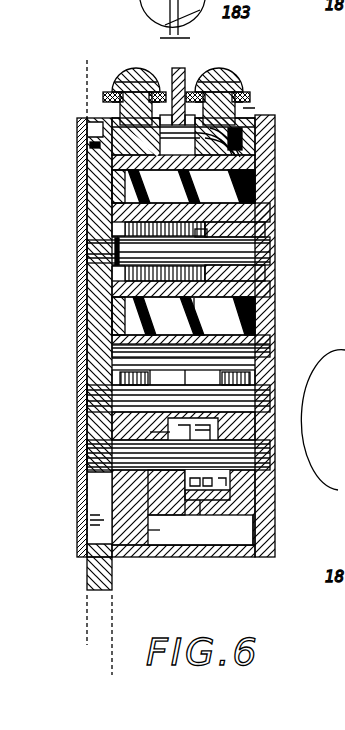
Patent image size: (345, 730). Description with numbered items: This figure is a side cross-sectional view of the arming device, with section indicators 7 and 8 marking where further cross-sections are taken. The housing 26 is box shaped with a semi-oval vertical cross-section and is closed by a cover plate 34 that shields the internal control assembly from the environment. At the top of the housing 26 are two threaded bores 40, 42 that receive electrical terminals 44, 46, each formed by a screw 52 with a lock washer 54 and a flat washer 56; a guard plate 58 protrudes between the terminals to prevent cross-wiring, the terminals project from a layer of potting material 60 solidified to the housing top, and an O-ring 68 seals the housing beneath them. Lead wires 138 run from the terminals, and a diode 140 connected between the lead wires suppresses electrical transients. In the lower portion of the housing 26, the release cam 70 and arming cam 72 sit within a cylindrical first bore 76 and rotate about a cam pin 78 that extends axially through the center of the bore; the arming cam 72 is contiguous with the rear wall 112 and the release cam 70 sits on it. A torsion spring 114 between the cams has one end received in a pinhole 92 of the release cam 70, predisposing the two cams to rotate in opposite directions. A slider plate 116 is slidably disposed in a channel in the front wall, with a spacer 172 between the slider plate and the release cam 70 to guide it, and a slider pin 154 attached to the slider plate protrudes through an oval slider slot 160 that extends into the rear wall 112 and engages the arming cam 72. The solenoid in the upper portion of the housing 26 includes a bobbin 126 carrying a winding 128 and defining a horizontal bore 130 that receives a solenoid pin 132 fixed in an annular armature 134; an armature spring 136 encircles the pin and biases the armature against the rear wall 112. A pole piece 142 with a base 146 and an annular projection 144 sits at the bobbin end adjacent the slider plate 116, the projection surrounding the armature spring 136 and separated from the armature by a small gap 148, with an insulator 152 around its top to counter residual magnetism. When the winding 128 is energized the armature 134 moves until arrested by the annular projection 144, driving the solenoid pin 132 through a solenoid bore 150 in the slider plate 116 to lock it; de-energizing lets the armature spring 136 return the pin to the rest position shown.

The section line 7- 7 is at (76, 74).
The section line 8- 8 is at (97, 143).
The housing 26 is at (212, 548).
The cover plate 34 is at (85, 440).
The threaded bore 40 is at (118, 108).
The threaded bore 42 is at (243, 110).
The electrical terminal 44 is at (130, 76).
The electrical terminal 46 is at (228, 76).
The screw 52 is at (155, 72).
The lock washer 54 is at (248, 92).
The flat washer 56 is at (246, 108).
The guard plate 58 is at (178, 68).
The potting material 60 is at (258, 116).
The O-ring 68 is at (238, 150).
The release cam 70 is at (168, 512).
The arming cam 72 is at (250, 428).
The first bore 76 is at (244, 548).
The cam pin 78 is at (92, 455).
The pinhole 92 is at (150, 433).
The rear wall 112 is at (278, 523).
The torsion spring 114 is at (220, 480).
The slider plate 116 is at (112, 585).
The bobbin 126 is at (272, 204).
The winding 128 is at (272, 312).
The horizontal bore 130 is at (268, 225).
The solenoid pin 132 is at (270, 260).
The armature 134 is at (262, 234).
The armature spring 136 is at (122, 276).
The terminal 138 is at (242, 137).
The diode 140 is at (118, 163).
The pole piece 142 is at (118, 228).
The annular projection 144 is at (125, 290).
The base 146 is at (118, 188).
The gap 148 is at (200, 285).
The solenoid bore 150 is at (100, 256).
The insulator 152 is at (197, 295).
The slider pin 154 is at (262, 400).
The slider slot 160 is at (262, 382).
The spacer 172 is at (152, 540).